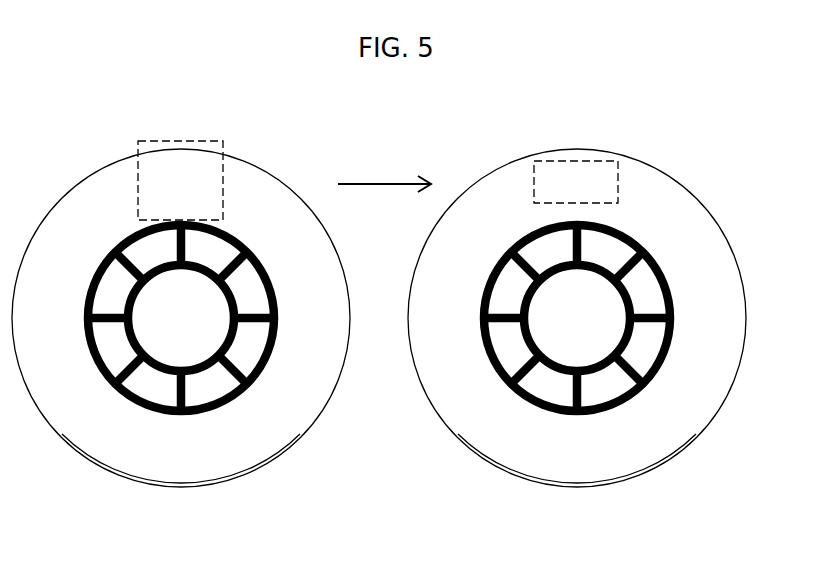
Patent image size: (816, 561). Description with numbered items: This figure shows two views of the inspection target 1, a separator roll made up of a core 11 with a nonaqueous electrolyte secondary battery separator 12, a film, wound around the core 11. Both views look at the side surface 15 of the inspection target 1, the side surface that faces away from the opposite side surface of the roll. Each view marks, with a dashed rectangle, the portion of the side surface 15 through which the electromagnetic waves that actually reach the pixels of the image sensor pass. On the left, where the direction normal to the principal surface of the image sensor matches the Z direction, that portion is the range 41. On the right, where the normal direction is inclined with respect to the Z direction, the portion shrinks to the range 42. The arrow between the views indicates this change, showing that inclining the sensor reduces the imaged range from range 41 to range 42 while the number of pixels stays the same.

The inspection target 1 is at (396, 322).
The core 11 is at (257, 378).
The nonaqueous electrolyte secondary battery separator 12 is at (262, 453).
The side surface 15 is at (122, 433).
The range 41 is at (181, 140).
The range 42 is at (578, 159).